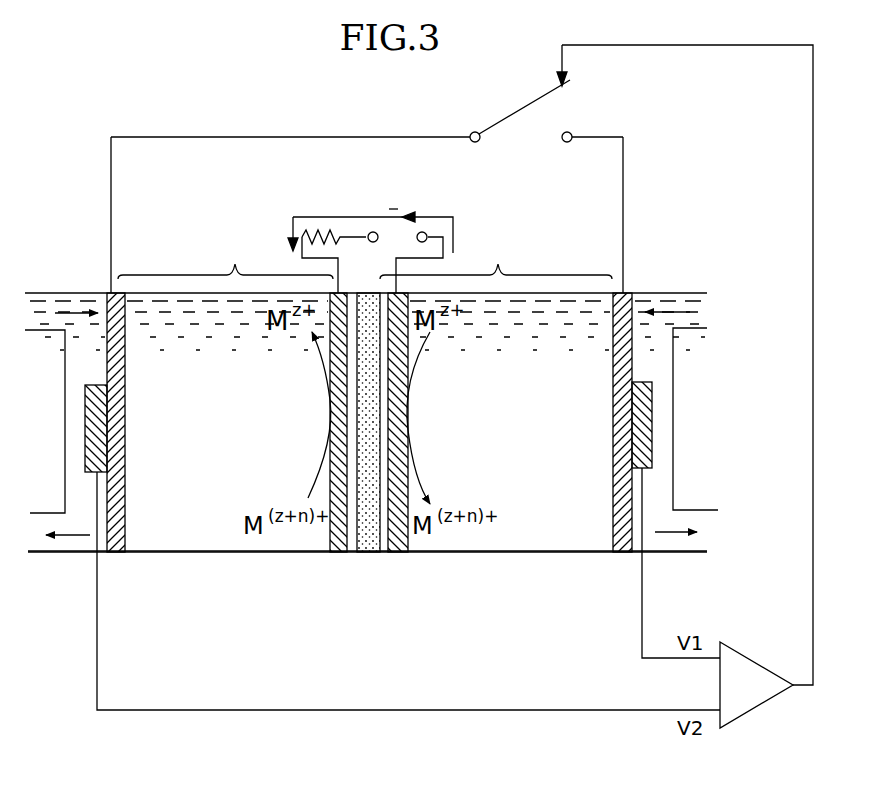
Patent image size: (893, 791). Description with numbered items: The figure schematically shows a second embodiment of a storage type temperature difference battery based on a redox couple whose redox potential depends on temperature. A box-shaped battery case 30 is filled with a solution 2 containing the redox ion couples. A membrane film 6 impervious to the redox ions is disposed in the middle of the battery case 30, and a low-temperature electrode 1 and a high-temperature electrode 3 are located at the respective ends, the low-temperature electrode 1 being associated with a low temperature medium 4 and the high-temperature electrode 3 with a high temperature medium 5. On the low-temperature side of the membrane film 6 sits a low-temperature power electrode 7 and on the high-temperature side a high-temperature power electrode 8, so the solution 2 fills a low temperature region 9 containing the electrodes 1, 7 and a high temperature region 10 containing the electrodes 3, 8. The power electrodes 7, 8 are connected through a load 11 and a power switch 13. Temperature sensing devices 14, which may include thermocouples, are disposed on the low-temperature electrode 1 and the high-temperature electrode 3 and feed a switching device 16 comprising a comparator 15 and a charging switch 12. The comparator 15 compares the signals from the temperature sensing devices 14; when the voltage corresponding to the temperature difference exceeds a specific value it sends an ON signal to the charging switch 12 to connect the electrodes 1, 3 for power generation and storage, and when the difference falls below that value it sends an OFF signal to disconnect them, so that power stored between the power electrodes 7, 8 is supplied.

The low-temperature electrode 1 is at (105, 298).
The solution 2 is at (174, 559).
The high-temperature electrode 3 is at (638, 292).
The low temperature medium 4 is at (61, 417).
The high temperature medium 5 is at (681, 416).
The membrane film 6 is at (368, 556).
The low-temperature power electrode 7 is at (339, 556).
The high-temperature power electrode 8 is at (403, 556).
The low temperature region 9 is at (225, 256).
The high temperature region 10 is at (496, 256).
The load 11 is at (322, 232).
The charging switch 12 is at (521, 117).
The power switch 13 is at (413, 224).
The temperature sensing device 14 is at (93, 448).
The comparator 15 is at (736, 706).
The switching device 16 is at (754, 713).
The battery case 30 is at (241, 556).